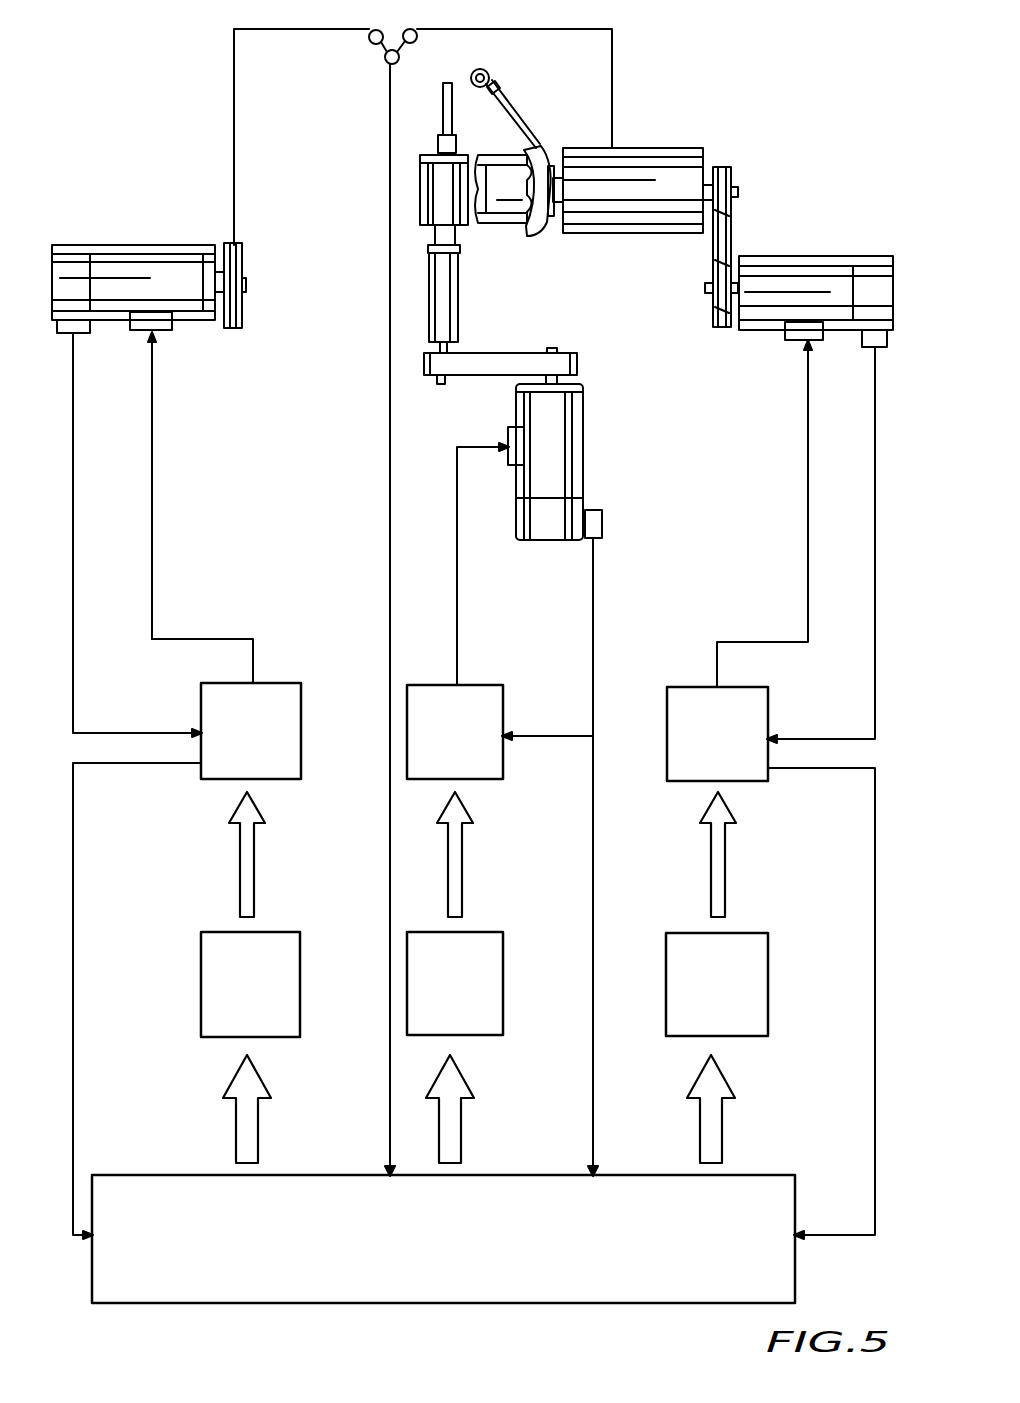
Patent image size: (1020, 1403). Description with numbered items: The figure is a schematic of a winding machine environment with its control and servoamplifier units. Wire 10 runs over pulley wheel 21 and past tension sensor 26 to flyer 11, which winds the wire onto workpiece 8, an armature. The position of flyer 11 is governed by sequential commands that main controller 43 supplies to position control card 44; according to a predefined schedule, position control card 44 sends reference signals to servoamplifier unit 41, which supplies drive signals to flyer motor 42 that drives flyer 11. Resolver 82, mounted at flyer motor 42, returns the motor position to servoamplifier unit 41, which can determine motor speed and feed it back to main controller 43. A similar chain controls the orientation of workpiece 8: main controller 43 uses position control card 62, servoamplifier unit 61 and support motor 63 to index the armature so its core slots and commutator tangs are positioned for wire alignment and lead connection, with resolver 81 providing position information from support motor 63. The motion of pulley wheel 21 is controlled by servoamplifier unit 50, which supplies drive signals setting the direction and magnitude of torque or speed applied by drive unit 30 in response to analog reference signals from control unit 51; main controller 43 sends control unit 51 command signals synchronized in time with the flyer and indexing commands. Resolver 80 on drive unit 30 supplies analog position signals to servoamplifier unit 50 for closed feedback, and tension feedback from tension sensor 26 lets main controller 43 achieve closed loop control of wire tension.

The workpiece 8 is at (425, 203).
The wire 10 is at (521, 32).
The flyer 11 is at (522, 118).
The pulley wheel 21 is at (241, 246).
The tension sensor 26 is at (416, 43).
The drive unit 30 is at (156, 251).
The servoamplifier unit 41 is at (757, 695).
The flyer motor 42 is at (813, 247).
The main controller 43 is at (795, 1264).
The position control card 44 is at (748, 936).
The servoamplifier unit 50 is at (268, 693).
The control unit 51 is at (295, 936).
The servoamplifier unit 61 is at (485, 690).
The position control card 62 is at (483, 937).
The support motor 63 is at (576, 447).
The resolver 80 is at (87, 338).
The resolver 81 is at (604, 525).
The resolver 82 is at (866, 346).